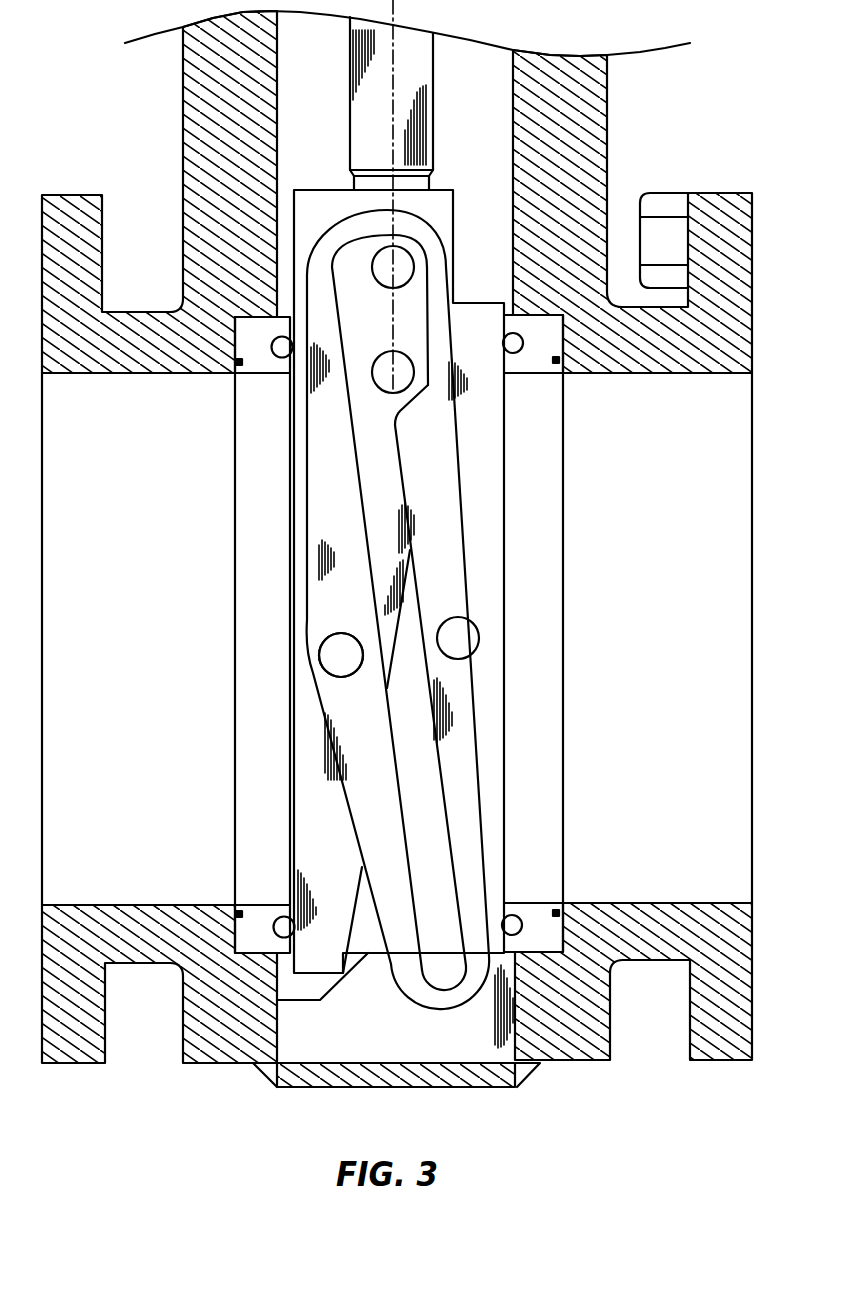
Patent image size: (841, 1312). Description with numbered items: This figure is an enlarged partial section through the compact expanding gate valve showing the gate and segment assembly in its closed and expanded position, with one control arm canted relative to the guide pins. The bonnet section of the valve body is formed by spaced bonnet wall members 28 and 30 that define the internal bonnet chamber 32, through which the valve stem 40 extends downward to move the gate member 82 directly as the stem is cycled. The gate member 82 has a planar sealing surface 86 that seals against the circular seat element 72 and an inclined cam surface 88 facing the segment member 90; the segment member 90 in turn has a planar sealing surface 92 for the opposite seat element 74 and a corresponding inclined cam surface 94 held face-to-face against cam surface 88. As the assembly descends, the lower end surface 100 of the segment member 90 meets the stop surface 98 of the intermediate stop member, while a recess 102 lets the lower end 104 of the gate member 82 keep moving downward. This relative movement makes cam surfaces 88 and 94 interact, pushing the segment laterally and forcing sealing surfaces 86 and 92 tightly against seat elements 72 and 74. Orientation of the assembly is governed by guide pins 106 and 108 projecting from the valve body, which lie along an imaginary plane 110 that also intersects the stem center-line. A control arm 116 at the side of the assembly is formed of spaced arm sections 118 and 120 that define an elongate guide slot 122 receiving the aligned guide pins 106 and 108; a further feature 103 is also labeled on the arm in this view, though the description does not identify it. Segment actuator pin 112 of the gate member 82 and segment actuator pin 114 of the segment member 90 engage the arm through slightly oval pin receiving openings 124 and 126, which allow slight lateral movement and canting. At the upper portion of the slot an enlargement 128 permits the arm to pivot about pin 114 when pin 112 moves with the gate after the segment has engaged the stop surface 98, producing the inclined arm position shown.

The bonnet wall member 28 is at (200, 115).
The bonnet wall member 30 is at (597, 87).
The internal bonnet chamber 32 is at (467, 67).
The valve stem 40 is at (360, 123).
The imaginary plane 110 is at (395, 127).
The guide pin 106 is at (417, 257).
The slot enlargement 128 is at (407, 302).
The guide pin 108 is at (383, 380).
The shoulder 103 is at (385, 437).
The seat element 72 is at (265, 377).
The seat element 74 is at (540, 375).
The planar sealing surface 92 is at (508, 430).
The segment member 90 is at (490, 468).
The control arm 116 is at (327, 565).
The inclined cam surface 94 is at (390, 625).
The pin receiving opening 126 is at (477, 620).
The segment actuator pin 114 is at (462, 647).
The segment actuator pin 112 is at (333, 663).
The inclined cam surface 88 is at (395, 655).
The pin receiving opening 124 is at (355, 673).
The arm section 120 is at (477, 710).
The guide slot 122 is at (420, 757).
The arm section 118 is at (372, 822).
The gate member 82 is at (312, 860).
The planar sealing surface 86 is at (293, 895).
The stop surface 98 is at (435, 952).
The lower end surface 100 is at (385, 953).
The recess 102 is at (325, 962).
The lower end 104 is at (316, 975).